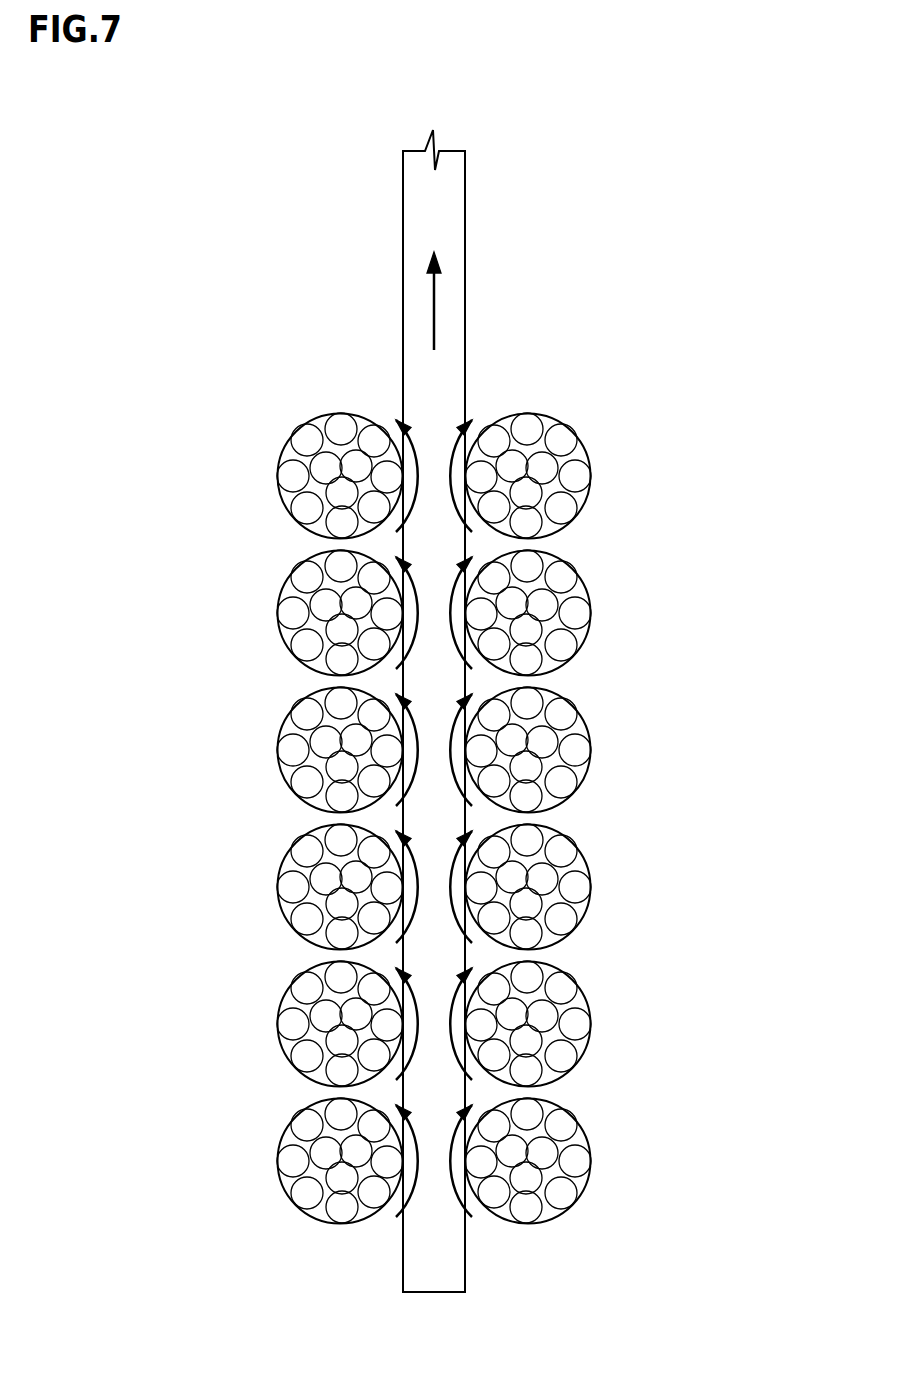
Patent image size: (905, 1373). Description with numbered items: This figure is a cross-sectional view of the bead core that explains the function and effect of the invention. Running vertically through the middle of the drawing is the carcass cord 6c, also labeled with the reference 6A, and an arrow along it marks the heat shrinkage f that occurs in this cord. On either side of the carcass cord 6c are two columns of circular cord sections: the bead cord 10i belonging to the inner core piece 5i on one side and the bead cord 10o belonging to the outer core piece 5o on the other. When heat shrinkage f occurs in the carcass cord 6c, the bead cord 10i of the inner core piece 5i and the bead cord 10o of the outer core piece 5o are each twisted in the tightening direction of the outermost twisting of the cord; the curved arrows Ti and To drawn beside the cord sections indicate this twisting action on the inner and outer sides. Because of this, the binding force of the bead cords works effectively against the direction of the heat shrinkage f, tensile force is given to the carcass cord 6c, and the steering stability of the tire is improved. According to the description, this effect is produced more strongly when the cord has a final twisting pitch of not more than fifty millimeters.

The carcass cord 6c is at (442, 218).
The heat exchanger core 6A is at (514, 711).
The heat shrinkage f is at (433, 300).
The inner core piece 5i is at (282, 840).
The outer core piece 5o is at (592, 840).
The bead cord of the inner core piece 10i is at (278, 456).
The bead cord of the outer core piece 10o is at (590, 456).
The inner side heat transfer Ti is at (400, 470).
The outer side heat transfer To is at (465, 470).